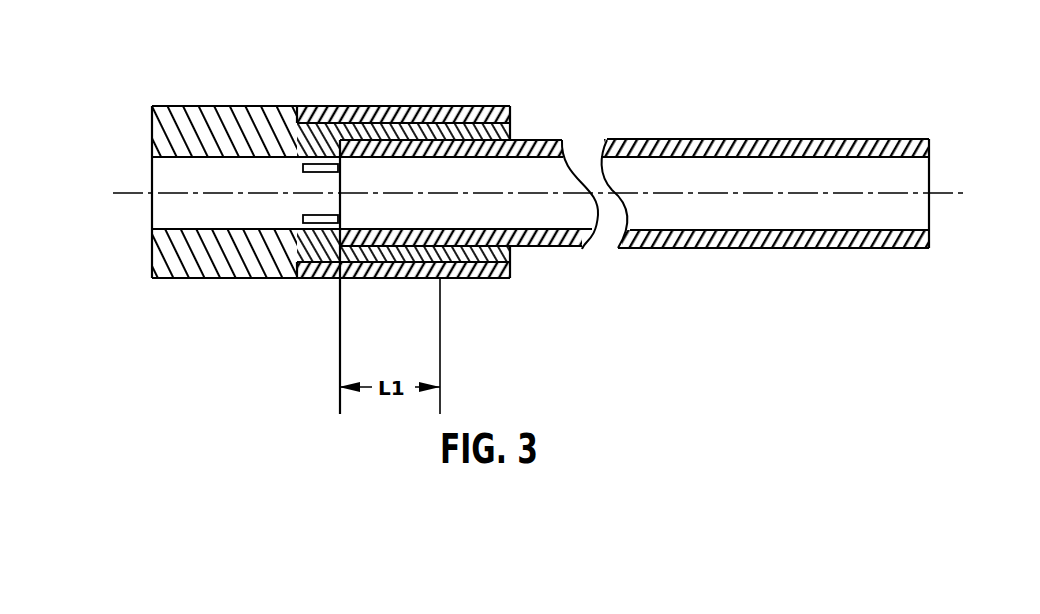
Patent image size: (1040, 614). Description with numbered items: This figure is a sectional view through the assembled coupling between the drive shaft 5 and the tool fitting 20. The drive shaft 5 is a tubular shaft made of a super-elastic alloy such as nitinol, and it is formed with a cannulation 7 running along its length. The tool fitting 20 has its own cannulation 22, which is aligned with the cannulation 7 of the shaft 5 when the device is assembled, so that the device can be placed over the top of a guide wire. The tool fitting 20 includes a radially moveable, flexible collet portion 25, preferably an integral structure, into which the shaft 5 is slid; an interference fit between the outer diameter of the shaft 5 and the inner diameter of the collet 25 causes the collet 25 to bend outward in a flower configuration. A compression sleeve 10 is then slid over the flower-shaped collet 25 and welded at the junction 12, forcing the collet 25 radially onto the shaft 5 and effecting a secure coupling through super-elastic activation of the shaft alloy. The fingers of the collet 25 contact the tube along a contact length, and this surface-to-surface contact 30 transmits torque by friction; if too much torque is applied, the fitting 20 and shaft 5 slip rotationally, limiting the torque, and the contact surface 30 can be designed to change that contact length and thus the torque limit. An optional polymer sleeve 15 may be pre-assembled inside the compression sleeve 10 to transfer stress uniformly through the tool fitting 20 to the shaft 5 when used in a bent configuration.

The drive shaft 5 is at (784, 139).
The cannulation 7 is at (928, 212).
The compression sleeve 10 is at (394, 118).
The junction 12 is at (297, 106).
The polymer sleeve 15 is at (508, 138).
The tool fitting 20 is at (213, 106).
The cannulation 22 is at (160, 203).
The collet portion 25 is at (322, 206).
The contact surface 30 is at (410, 233).